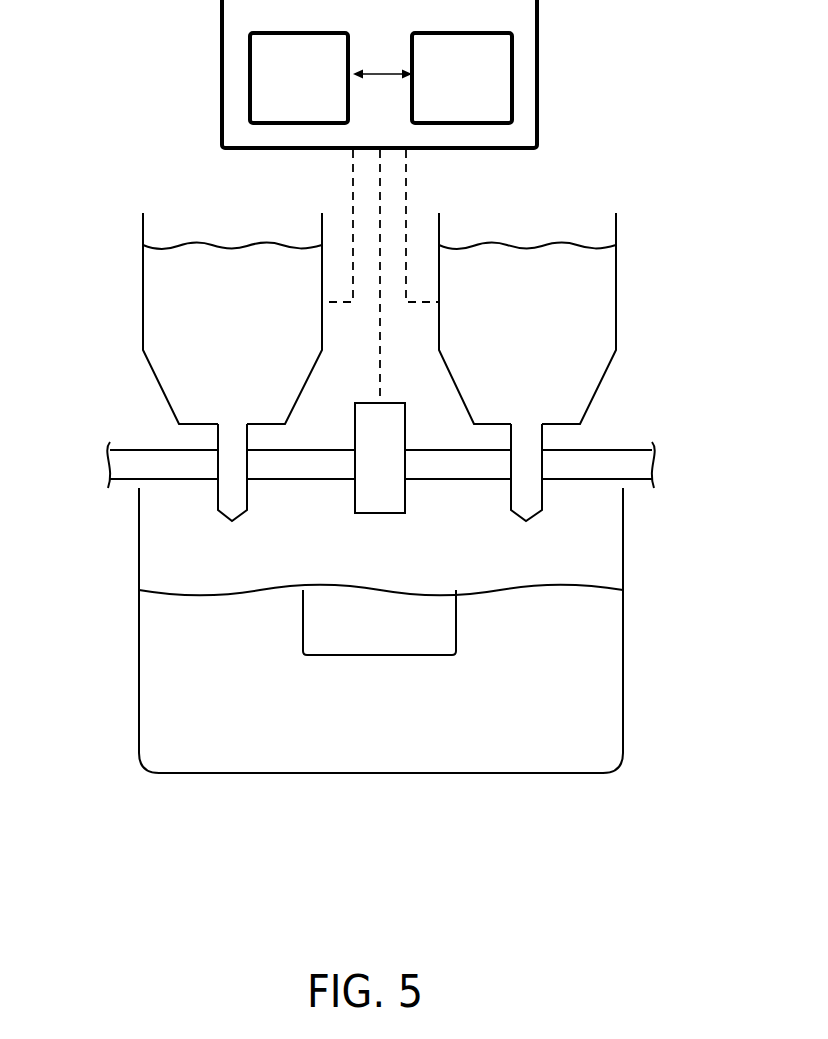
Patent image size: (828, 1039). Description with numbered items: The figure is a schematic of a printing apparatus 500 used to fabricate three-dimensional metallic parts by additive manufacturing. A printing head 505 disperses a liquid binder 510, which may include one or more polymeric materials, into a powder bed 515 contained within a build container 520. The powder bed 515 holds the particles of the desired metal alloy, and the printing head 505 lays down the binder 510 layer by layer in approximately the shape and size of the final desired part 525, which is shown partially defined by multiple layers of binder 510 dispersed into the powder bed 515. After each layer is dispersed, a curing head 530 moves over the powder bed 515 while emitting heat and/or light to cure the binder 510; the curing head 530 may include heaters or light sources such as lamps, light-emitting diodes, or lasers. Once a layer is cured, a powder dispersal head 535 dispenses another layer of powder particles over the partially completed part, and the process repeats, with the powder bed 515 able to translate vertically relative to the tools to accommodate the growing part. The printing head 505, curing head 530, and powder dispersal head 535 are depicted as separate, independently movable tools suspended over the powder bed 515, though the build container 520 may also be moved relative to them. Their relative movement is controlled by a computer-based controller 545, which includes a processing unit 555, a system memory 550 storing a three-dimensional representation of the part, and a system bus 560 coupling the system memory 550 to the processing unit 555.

The printing apparatus 500 is at (156, 148).
The printing head 505 is at (220, 518).
The liquid binder 510 is at (252, 341).
The powder bed 515 is at (227, 753).
The build container 520 is at (624, 552).
The final desired part 525 is at (375, 643).
The curing head 530 is at (383, 513).
The powder dispersal head 535 is at (538, 518).
The computer-based controller 545 is at (538, 78).
The system memory 550 is at (320, 90).
The processing unit 555 is at (482, 98).
The system bus 560 is at (375, 71).